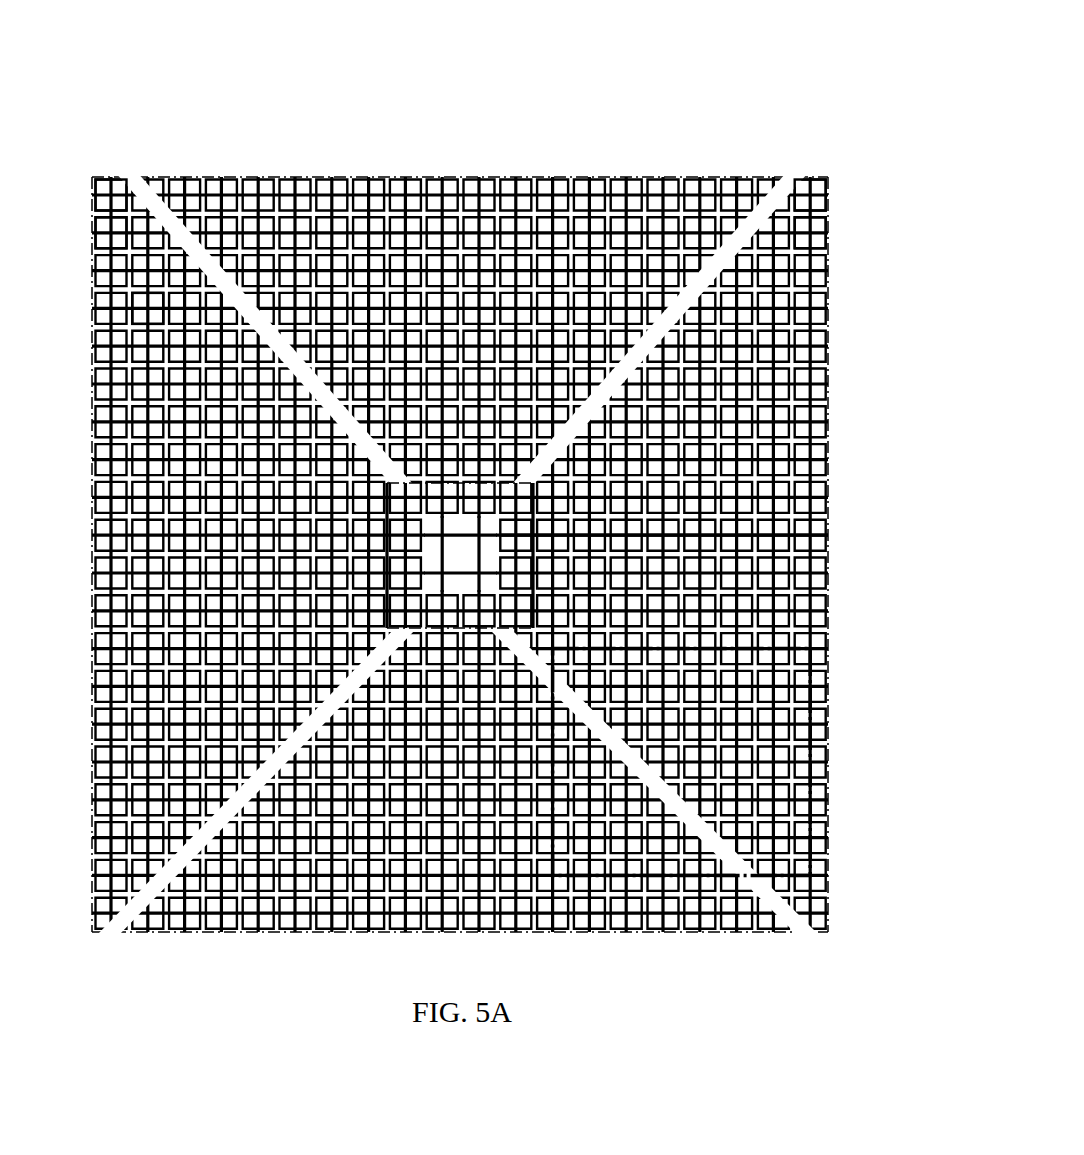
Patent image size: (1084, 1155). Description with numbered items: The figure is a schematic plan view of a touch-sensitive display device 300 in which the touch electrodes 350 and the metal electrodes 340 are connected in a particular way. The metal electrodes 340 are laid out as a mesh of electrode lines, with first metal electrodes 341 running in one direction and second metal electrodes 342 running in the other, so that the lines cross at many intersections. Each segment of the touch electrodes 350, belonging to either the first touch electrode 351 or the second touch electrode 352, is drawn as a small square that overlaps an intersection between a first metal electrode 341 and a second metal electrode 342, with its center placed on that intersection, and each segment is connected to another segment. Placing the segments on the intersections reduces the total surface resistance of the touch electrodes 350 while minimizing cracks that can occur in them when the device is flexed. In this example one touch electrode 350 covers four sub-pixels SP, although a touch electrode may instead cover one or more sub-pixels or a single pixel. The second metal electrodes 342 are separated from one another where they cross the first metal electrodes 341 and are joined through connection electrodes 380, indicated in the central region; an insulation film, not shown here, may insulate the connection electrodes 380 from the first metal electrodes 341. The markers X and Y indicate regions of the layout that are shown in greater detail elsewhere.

The touch-sensitive display device 300 is at (756, 66).
The touch electrodes 350 is at (60, 124).
The first touch electrode 351 is at (140, 183).
The second touch electrode 352 is at (95, 222).
The metal electrodes 340 is at (792, 124).
The first metal electrode 341 is at (778, 183).
The second metal electrode 342 is at (828, 228).
The sub-pixel SP is at (137, 293).
The connection electrode 380 is at (427, 533).
The X region X is at (520, 548).
The Y region Y is at (812, 789).